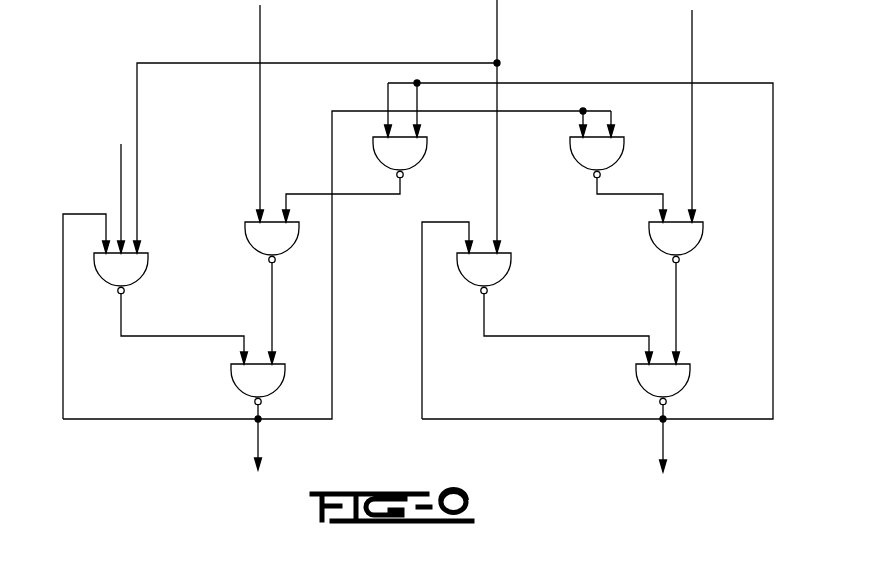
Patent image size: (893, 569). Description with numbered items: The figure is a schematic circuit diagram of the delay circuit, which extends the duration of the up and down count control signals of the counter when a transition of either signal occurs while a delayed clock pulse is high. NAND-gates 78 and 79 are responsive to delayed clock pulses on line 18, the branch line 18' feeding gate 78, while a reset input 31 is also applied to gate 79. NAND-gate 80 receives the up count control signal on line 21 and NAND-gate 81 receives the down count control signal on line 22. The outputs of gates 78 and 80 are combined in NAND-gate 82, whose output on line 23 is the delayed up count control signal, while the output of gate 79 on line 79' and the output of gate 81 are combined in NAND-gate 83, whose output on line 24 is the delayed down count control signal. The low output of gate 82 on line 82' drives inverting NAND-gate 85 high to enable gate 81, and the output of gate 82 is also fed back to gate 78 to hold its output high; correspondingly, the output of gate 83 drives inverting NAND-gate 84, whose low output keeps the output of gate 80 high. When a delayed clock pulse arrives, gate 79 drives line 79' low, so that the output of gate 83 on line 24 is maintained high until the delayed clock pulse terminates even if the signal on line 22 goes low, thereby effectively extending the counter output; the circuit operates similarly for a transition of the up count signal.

The delayed clock pulse line 18 is at (509, 126).
The delayed clock input line 18' is at (522, 186).
The up count control signal line 21 is at (692, 33).
The down count control signal line 22 is at (260, 35).
The delayed up output line 23 is at (664, 439).
The delayed down output line 24 is at (259, 437).
The reset 31 is at (121, 186).
The NAND-gate 78 is at (511, 274).
The NAND-gate 79 is at (127, 316).
The output line of gate 79 79' is at (184, 329).
The NAND-gate 80 is at (702, 244).
The NAND-gate 81 is at (245, 230).
The NAND-gate 82 is at (685, 376).
The output line of gate 82 82' is at (607, 249).
The NAND-gate 83 is at (230, 381).
The inverting NAND-gate 84 is at (624, 150).
The inverting NAND-gate 85 is at (427, 150).